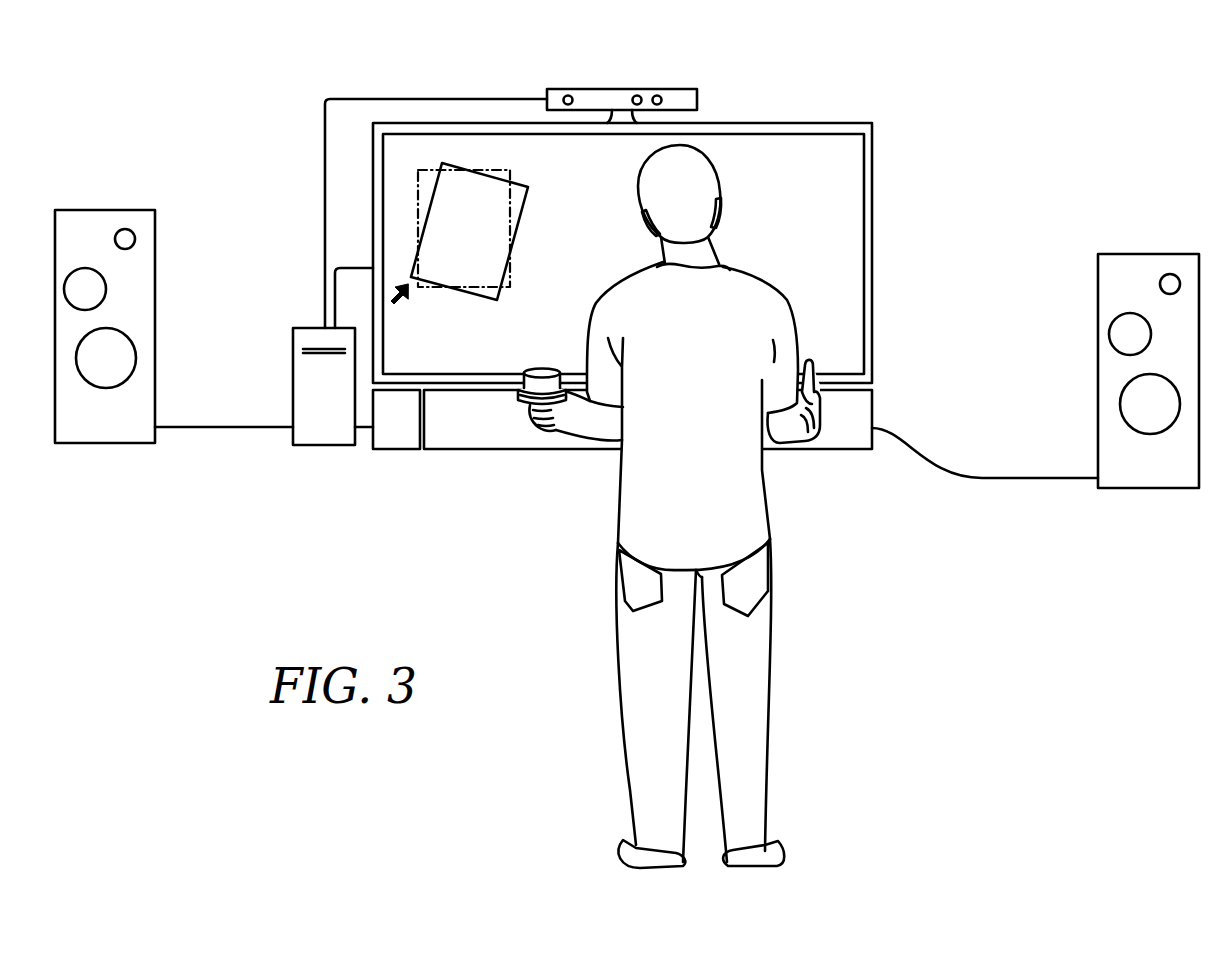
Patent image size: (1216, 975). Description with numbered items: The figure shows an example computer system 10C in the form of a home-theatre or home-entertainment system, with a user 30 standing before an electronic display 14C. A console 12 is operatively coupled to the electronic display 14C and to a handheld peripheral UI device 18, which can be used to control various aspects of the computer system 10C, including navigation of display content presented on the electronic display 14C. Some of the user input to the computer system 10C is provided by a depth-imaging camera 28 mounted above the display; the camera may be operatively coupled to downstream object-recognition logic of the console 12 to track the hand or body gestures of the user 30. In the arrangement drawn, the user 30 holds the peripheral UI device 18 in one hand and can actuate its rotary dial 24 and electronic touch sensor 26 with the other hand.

The computer system 10C is at (981, 176).
The console 12 is at (337, 398).
The electronic display 14C is at (583, 201).
The peripheral user-interface device 18 is at (538, 328).
The rotary dial 24 is at (560, 388).
The electronic touch sensor 26 is at (538, 371).
The depth-imaging camera 28 is at (614, 89).
The user 30 is at (687, 520).